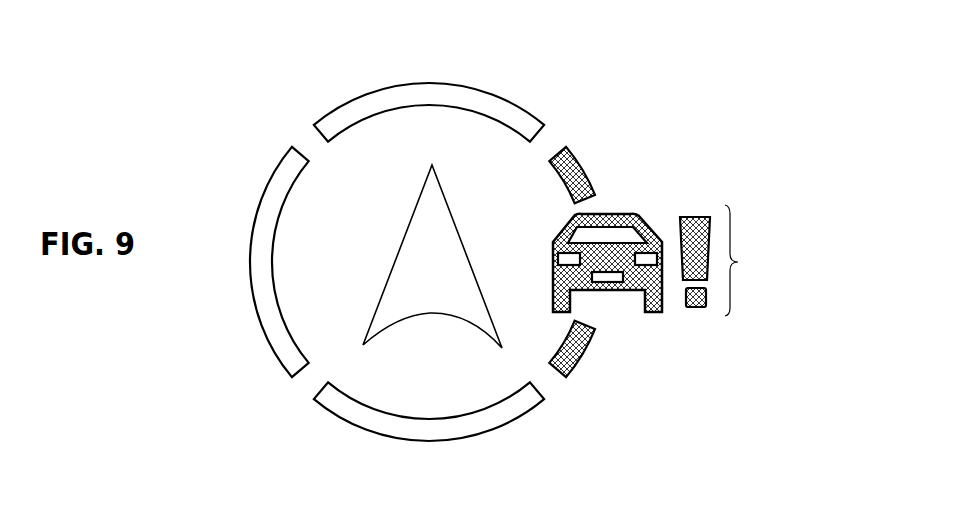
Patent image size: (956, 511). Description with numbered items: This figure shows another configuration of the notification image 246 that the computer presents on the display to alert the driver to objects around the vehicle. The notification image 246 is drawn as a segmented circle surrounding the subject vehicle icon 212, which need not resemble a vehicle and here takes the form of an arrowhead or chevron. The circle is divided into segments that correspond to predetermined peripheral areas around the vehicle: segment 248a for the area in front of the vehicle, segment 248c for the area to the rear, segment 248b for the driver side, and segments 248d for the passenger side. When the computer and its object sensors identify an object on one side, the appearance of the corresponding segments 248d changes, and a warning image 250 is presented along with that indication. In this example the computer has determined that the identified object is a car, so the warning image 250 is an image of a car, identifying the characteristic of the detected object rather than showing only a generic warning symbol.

The subject vehicle icon 212 is at (440, 247).
The notification image 246 is at (421, 260).
The segment 248a is at (435, 97).
The segment 248b is at (275, 202).
The segment 248c is at (397, 425).
The segment 248d is at (568, 173).
The warning image 250 is at (752, 268).